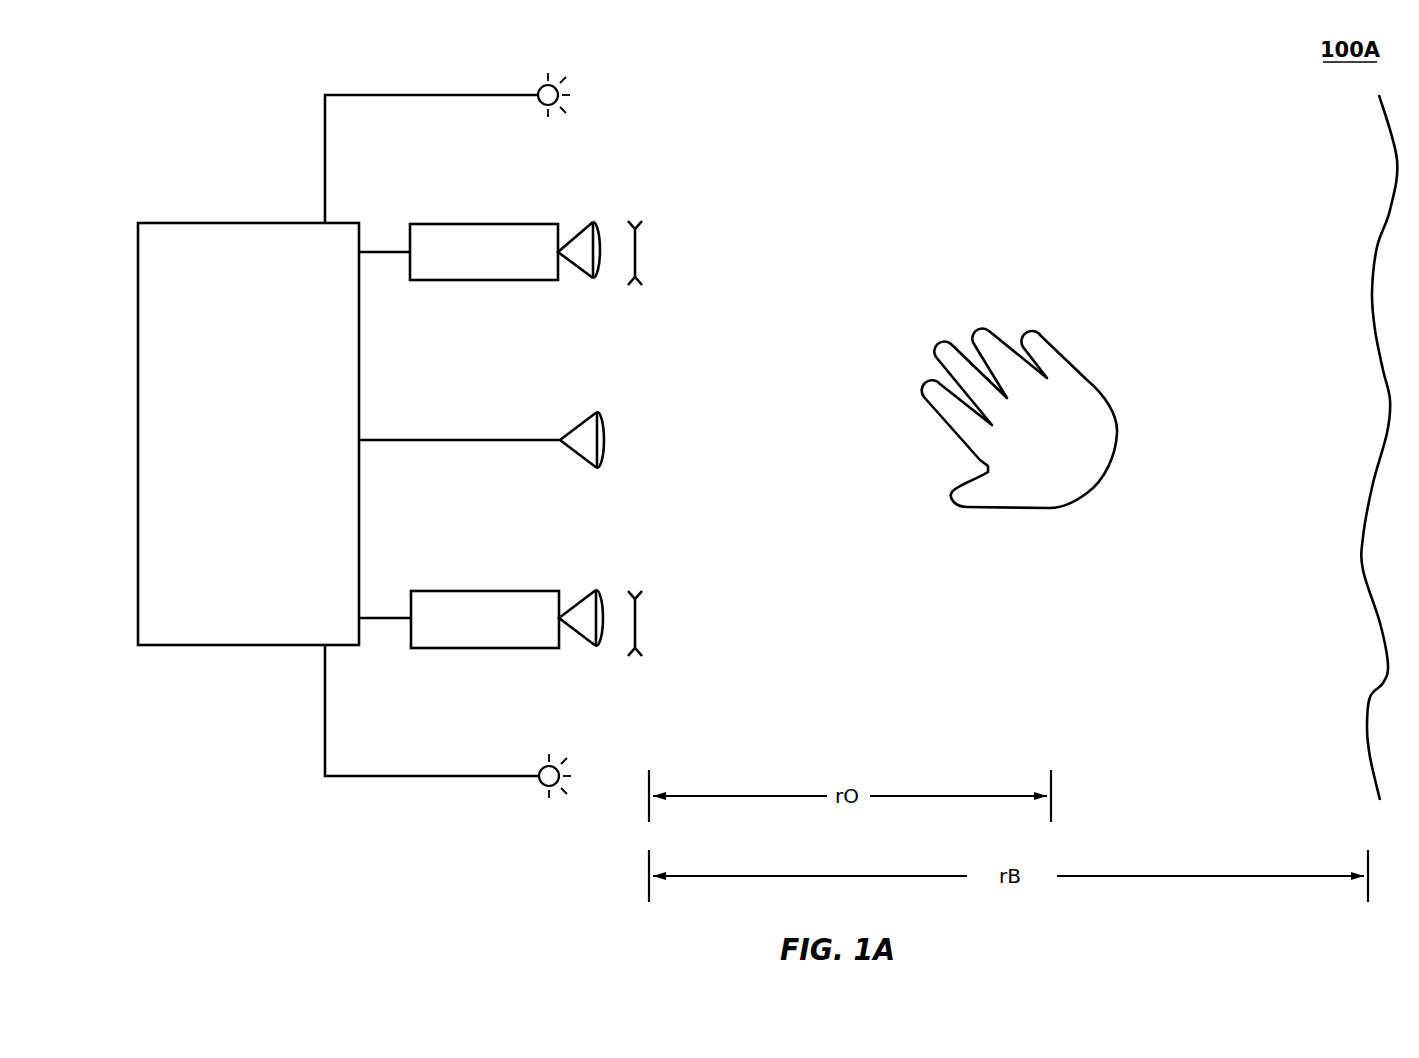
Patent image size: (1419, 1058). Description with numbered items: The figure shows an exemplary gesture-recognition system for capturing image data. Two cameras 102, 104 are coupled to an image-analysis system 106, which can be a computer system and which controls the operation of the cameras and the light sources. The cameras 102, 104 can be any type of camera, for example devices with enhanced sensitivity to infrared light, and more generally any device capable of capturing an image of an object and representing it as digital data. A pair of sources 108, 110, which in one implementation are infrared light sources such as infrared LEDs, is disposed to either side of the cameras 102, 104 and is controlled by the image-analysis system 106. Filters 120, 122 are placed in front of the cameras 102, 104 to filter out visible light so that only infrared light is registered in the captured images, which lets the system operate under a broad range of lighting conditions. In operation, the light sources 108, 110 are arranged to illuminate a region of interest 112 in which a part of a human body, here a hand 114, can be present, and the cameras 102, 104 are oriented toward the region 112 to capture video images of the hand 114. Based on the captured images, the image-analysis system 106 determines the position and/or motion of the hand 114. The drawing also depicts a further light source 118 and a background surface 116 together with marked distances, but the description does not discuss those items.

The camera 102 is at (482, 224).
The camera 104 is at (480, 591).
The image-analysis system 106 is at (220, 223).
The light source 108 is at (540, 105).
The light source 110 is at (540, 787).
The region of interest 112 is at (892, 620).
The hand 114 is at (1082, 378).
The background wall 116 is at (1380, 360).
The light source 118 is at (475, 440).
The filter 120 is at (640, 253).
The filter 122 is at (640, 627).